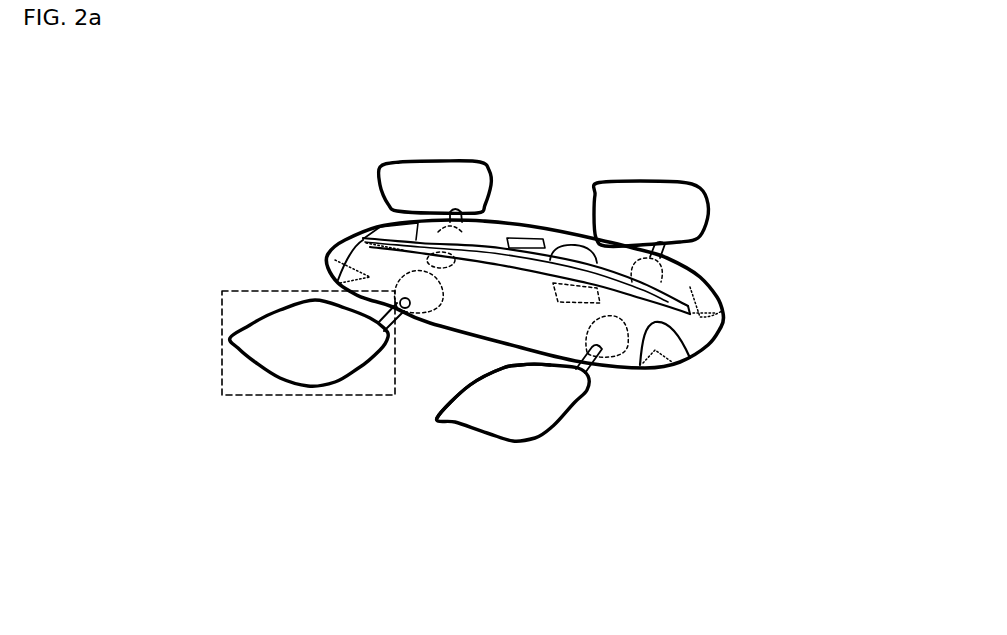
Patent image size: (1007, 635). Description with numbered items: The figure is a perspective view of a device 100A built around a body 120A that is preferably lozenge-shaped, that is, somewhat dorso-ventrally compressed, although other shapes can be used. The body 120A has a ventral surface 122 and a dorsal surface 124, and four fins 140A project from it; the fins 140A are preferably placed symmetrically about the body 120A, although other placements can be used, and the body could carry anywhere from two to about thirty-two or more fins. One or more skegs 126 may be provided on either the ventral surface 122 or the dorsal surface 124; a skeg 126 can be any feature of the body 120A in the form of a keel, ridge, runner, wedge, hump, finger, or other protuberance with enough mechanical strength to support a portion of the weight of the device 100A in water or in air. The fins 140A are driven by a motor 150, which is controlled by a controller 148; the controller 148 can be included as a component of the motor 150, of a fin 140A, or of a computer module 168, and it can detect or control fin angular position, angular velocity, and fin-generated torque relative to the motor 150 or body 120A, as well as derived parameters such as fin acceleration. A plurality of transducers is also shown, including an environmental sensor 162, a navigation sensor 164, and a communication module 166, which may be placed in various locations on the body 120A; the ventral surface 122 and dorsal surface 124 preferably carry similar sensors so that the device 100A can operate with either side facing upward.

The device 100A is at (443, 299).
The body 120A is at (603, 287).
The fins 140A is at (222, 375).
The ventral surface 122 is at (484, 423).
The dorsal surface 124 is at (510, 313).
The skeg 126 is at (488, 241).
The controller 148 is at (421, 316).
The motor 150 is at (444, 295).
The environmental sensor 162 is at (390, 222).
The navigation sensor 164 is at (528, 237).
The communication module 166 is at (570, 239).
The computer module 168 is at (557, 300).